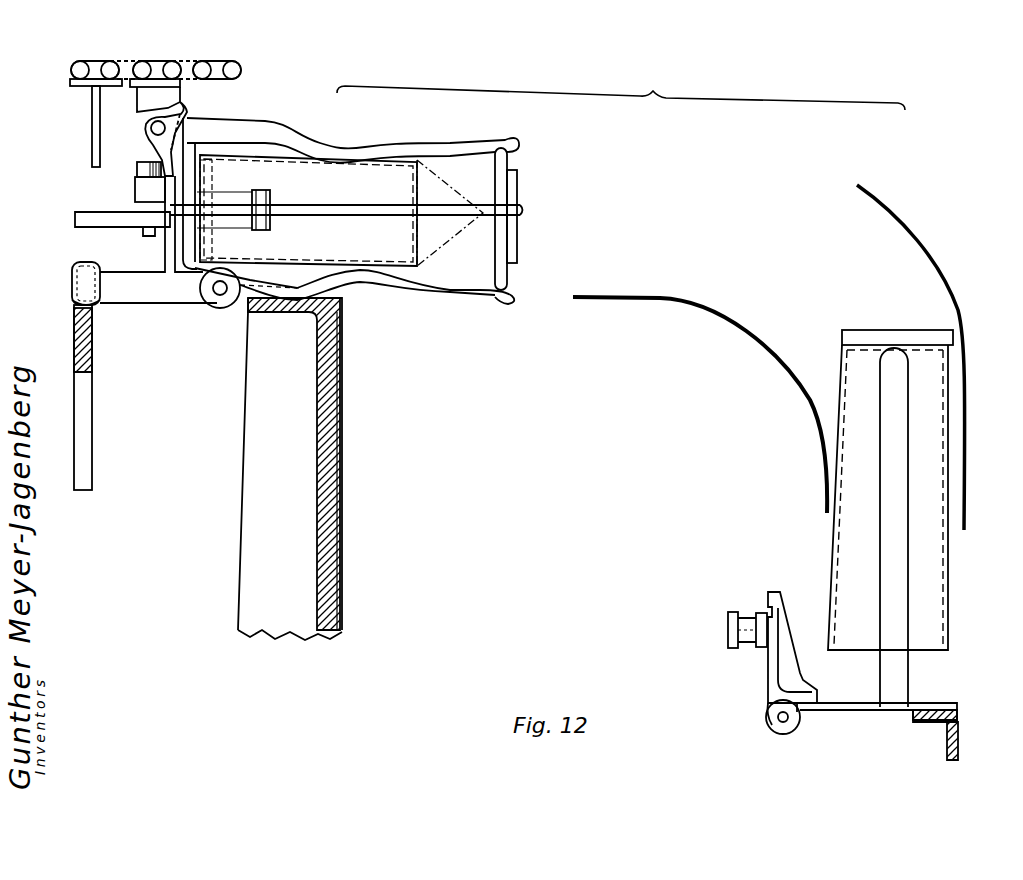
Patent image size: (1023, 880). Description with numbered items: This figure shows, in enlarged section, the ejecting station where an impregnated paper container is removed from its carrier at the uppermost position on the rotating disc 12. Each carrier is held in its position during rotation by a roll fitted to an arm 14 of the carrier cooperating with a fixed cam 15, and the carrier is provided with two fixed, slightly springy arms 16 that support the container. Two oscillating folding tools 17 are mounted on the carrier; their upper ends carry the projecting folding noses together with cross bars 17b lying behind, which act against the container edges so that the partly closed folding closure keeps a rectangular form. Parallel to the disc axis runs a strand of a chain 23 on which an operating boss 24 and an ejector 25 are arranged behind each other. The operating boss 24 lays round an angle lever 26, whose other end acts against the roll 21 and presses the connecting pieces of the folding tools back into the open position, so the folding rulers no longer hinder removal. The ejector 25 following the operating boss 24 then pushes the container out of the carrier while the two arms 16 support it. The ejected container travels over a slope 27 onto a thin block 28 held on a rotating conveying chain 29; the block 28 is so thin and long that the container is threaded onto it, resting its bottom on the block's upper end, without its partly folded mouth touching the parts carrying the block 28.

The disc 12 is at (318, 362).
The arm 14 is at (125, 292).
The fixed cam 15 is at (78, 412).
The fixed arms 16 is at (343, 147).
The folding tools 17 is at (300, 208).
The cross bars 17b is at (497, 187).
The roll 21 is at (140, 173).
The chain 23 is at (220, 64).
The operating boss 24 is at (165, 95).
The ejector 25 is at (92, 137).
The angle lever 26 is at (155, 151).
The slope 27 is at (797, 387).
The block 28 is at (887, 637).
The conveying chain 29 is at (780, 673).